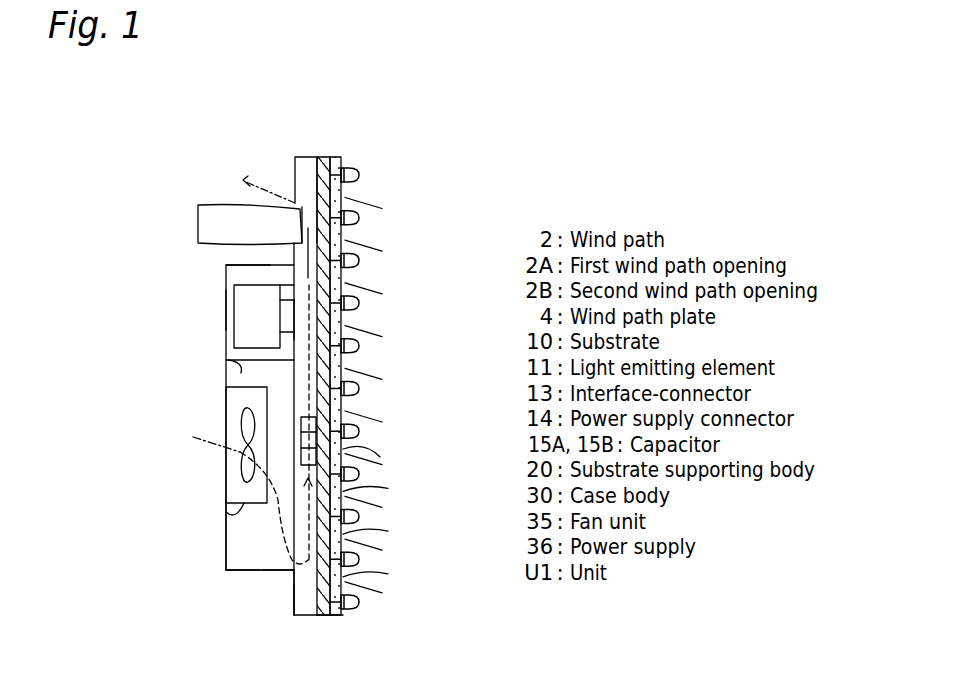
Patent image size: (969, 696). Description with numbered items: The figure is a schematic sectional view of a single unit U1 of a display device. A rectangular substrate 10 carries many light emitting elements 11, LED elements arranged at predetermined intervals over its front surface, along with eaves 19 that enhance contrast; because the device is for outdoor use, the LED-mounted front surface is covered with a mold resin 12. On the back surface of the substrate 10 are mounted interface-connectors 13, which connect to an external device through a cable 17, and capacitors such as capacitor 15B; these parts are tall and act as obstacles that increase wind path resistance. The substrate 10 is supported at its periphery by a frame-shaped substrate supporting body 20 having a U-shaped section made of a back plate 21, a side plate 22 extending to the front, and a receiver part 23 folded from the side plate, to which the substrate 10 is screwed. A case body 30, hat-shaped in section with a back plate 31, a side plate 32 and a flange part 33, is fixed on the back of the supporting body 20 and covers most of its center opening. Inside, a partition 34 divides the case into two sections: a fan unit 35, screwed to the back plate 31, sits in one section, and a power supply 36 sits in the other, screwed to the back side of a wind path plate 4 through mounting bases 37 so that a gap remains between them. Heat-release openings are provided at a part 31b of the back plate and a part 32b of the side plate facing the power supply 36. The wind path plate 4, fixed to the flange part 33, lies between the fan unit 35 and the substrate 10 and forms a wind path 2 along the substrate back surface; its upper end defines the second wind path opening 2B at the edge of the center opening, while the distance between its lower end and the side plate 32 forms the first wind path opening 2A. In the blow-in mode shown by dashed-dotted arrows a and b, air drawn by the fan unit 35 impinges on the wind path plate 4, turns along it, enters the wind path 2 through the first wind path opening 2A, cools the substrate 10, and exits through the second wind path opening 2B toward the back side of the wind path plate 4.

The wind path 2 is at (308, 320).
The first wind path opening 2A is at (285, 580).
The second wind path opening 2B is at (295, 202).
The wind path plate 4 is at (296, 372).
The substrate 10 is at (324, 154).
The light emitting element 11 is at (343, 240).
The mold resin 12 is at (343, 282).
The interface-connector 13 is at (343, 199).
The capacitor 15B is at (315, 410).
The cable 17 is at (210, 204).
The eaves 19 is at (379, 500).
The substrate supporting body 20 is at (365, 663).
The back plate 21 is at (300, 617).
The side plate 22 is at (318, 617).
The receiver part 23 is at (328, 617).
The case body 30 is at (222, 381).
The back plate 31 is at (226, 547).
The part in the back plate 31b is at (226, 310).
The side plate 32 is at (226, 571).
The part in the side plate 32b is at (270, 254).
The flange part 33 is at (292, 600).
The partition 34 is at (226, 372).
The fan unit 35 is at (226, 512).
The power supply 36 is at (234, 333).
The mounting base 37 is at (290, 282).
The unit U1 is at (128, 298).
The dashed-dotted line arrow a is at (207, 436).
The dashed-dotted line arrow b is at (258, 182).